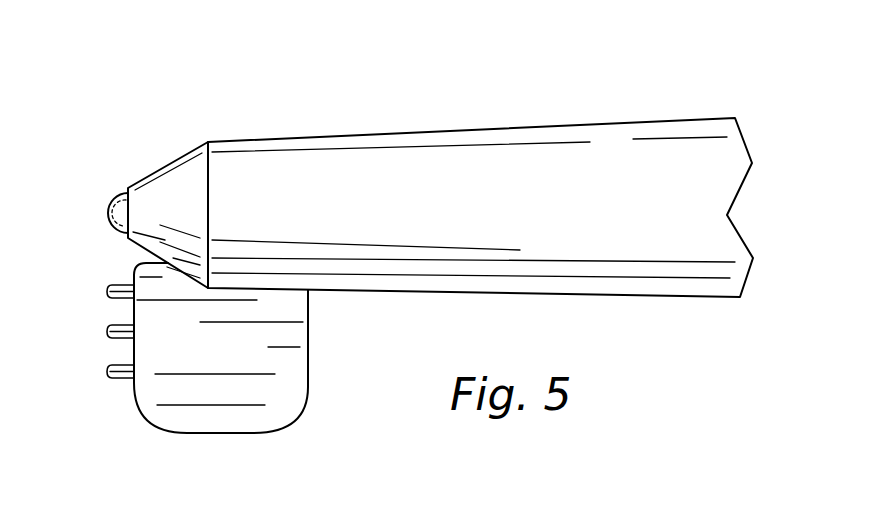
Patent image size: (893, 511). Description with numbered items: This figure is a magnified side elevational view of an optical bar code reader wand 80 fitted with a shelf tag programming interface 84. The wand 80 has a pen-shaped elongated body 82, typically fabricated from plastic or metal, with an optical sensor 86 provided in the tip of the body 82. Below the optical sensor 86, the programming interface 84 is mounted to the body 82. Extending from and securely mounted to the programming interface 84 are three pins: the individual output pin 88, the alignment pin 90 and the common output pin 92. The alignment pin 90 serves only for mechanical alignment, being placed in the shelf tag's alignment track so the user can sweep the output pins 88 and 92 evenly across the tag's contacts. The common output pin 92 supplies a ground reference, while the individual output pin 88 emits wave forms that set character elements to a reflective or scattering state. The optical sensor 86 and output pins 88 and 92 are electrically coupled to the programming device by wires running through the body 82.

The optical bar code reader wand 80 is at (232, 113).
The body 82 is at (508, 158).
The programming interface 84 is at (240, 388).
The optical sensor 86 is at (100, 203).
The individual output pin 88 is at (108, 291).
The alignment pin 90 is at (108, 331).
The common output pin 92 is at (108, 371).